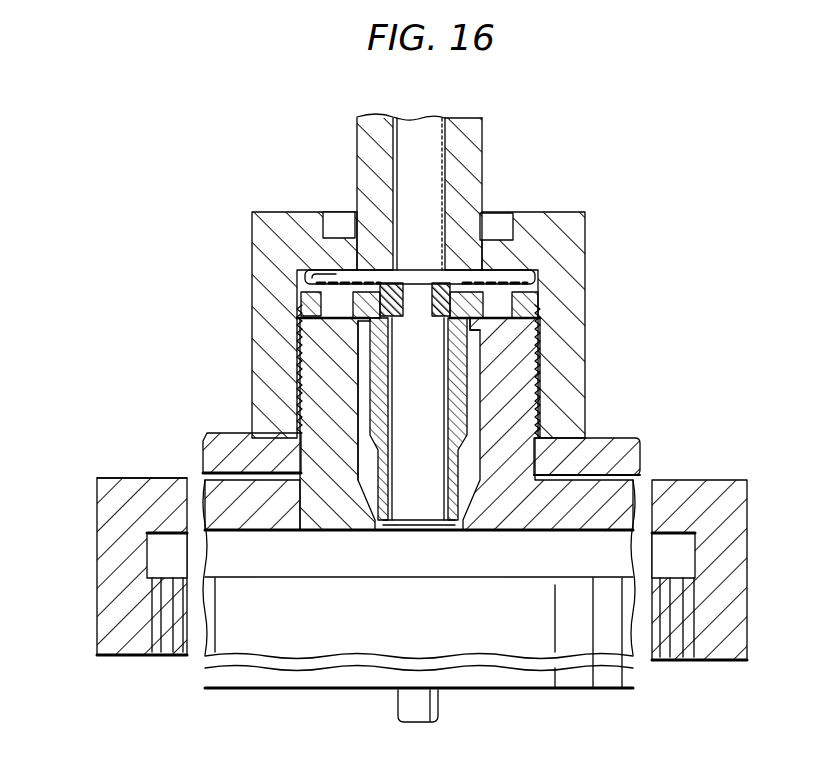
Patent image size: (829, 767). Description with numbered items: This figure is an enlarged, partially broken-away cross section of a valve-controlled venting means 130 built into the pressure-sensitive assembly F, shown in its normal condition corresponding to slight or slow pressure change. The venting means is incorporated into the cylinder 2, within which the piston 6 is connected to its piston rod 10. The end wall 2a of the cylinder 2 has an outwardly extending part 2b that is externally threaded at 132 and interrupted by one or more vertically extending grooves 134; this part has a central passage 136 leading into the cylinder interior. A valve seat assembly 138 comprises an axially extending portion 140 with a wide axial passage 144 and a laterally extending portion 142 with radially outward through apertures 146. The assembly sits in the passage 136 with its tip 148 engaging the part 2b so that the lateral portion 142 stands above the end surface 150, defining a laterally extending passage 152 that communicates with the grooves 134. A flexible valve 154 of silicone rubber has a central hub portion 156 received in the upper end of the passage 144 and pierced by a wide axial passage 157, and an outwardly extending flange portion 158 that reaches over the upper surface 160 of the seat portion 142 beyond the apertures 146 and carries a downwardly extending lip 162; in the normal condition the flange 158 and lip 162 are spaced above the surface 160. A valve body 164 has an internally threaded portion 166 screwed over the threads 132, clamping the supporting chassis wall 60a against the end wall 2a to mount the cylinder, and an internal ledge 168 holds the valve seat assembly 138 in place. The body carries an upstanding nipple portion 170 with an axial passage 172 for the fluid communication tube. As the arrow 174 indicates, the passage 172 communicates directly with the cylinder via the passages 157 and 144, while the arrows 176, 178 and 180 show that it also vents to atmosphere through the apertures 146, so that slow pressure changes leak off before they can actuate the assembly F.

The cylinder 2 is at (107, 567).
The end wall 2a is at (690, 490).
The outwardly extending part 2b is at (515, 387).
The piston 6 is at (420, 621).
The piston rod 10 is at (415, 704).
The supporting chassis wall 60a is at (630, 452).
The valve controlled venting means 130 is at (306, 304).
The external threads 132 is at (536, 404).
The vertically extending grooves 134 is at (300, 386).
The central passage 136 is at (362, 408).
The valve seat assembly 138 is at (478, 367).
The axially extending portion 140 is at (300, 370).
The laterally extending portion 142 is at (540, 307).
The wide axial passage 144 is at (444, 528).
The through apertures 146 is at (335, 302).
The tip 148 is at (390, 531).
The end surface 150 is at (503, 334).
The laterally extending passage 152 is at (320, 322).
The flexible valve 154 is at (480, 262).
The central hub portion 156 is at (397, 320).
The wide axial passage 157 is at (432, 320).
The outwardly extending flange portion 158 is at (534, 272).
The upper surface 160 is at (528, 292).
The downwardly extending lip 162 is at (530, 284).
The valve body 164 is at (350, 184).
The internally threaded portion 166 is at (568, 428).
The internal ledge 168 is at (303, 292).
The nipple portion 170 is at (357, 156).
The axial passage 172 is at (445, 151).
The arrow 174 is at (418, 360).
The arrow 176 is at (315, 295).
The arrow 178 is at (373, 358).
The arrow 180 is at (298, 480).
The pressure-sensitive assembly F is at (88, 484).